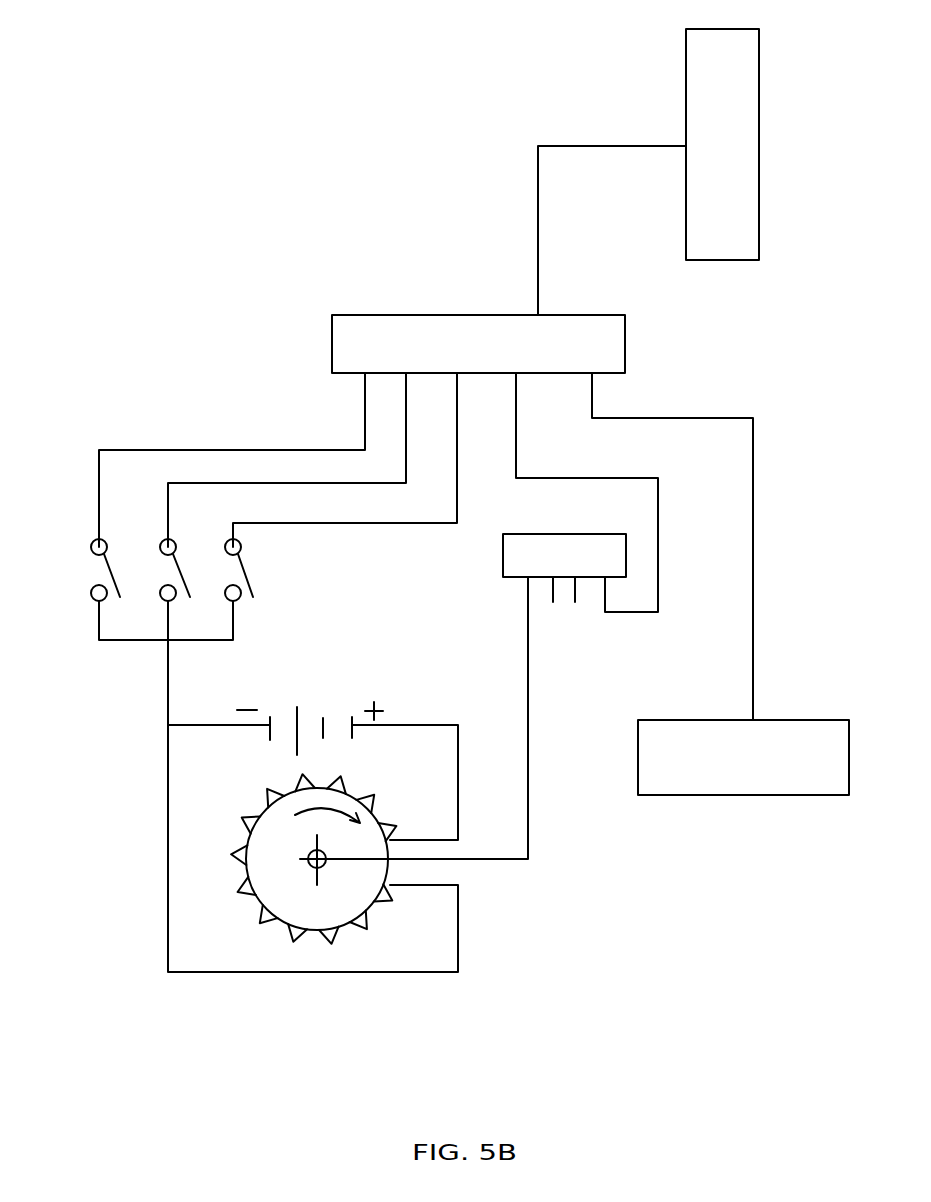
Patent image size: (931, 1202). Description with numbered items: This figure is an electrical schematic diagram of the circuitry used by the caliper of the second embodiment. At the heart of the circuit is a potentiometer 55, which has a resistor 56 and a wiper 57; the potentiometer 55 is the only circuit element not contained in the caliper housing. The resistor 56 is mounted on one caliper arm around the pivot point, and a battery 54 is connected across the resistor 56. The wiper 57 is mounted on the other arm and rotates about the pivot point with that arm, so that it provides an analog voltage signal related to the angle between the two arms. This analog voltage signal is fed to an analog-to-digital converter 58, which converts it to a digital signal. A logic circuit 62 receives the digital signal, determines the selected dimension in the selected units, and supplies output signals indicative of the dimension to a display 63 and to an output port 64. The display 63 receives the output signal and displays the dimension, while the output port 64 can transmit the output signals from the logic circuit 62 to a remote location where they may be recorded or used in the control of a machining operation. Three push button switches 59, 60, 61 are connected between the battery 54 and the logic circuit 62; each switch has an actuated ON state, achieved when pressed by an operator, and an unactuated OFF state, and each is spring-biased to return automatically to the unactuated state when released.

The battery 54 is at (312, 713).
The potentiometer 55 is at (236, 808).
The resistor 56 is at (263, 928).
The wiper 57 is at (323, 850).
The analog-to-digital converter 58 is at (587, 533).
The push button switch 59 is at (85, 545).
The push button switch 60 is at (162, 577).
The push button switch 61 is at (267, 597).
The logic circuit 62 is at (413, 315).
The display 63 is at (802, 720).
The output port 64 is at (686, 107).